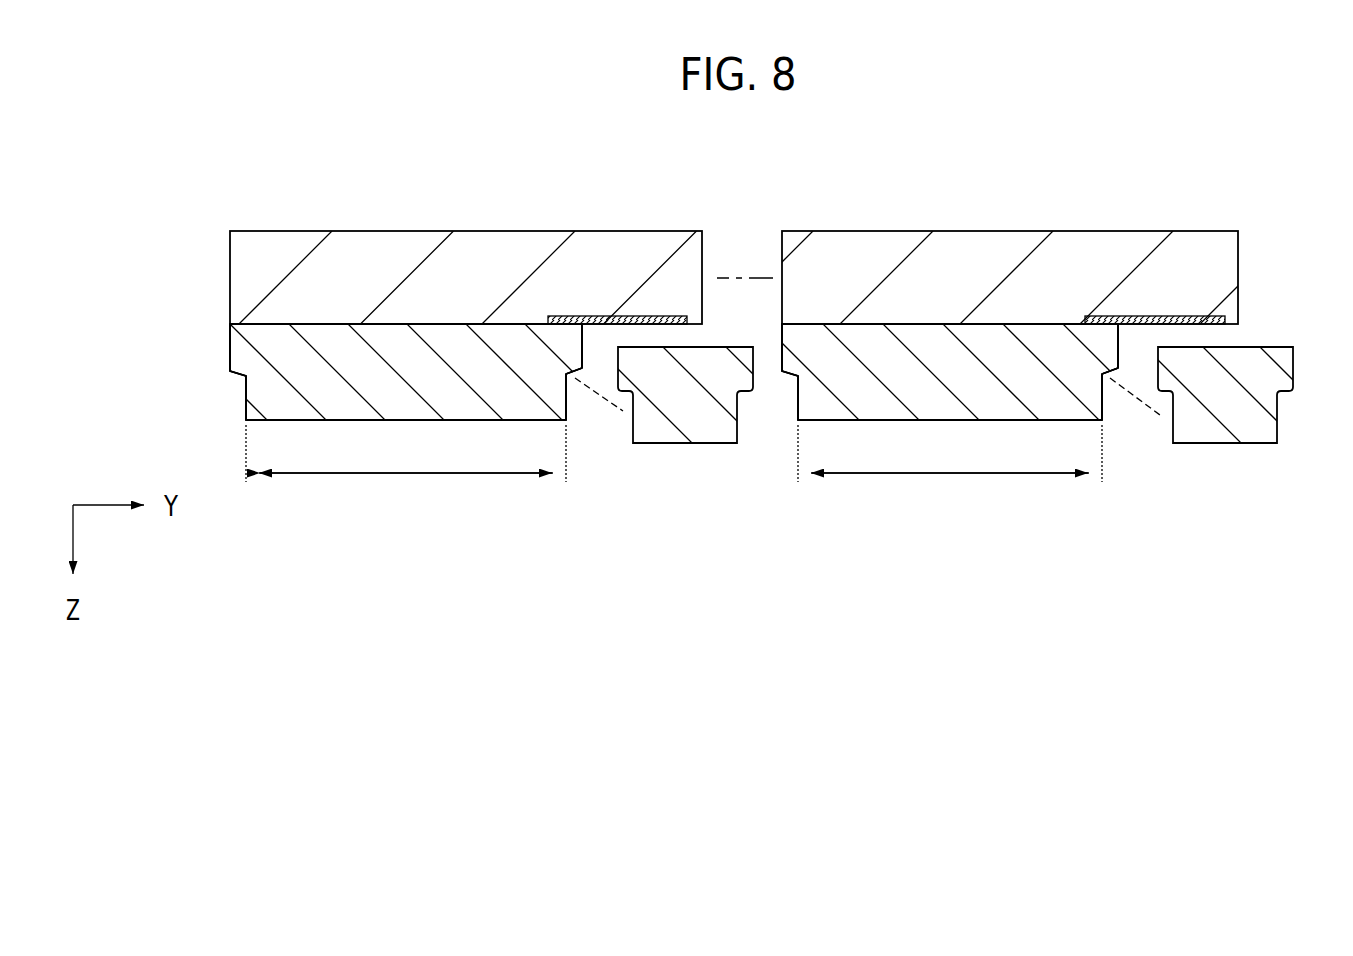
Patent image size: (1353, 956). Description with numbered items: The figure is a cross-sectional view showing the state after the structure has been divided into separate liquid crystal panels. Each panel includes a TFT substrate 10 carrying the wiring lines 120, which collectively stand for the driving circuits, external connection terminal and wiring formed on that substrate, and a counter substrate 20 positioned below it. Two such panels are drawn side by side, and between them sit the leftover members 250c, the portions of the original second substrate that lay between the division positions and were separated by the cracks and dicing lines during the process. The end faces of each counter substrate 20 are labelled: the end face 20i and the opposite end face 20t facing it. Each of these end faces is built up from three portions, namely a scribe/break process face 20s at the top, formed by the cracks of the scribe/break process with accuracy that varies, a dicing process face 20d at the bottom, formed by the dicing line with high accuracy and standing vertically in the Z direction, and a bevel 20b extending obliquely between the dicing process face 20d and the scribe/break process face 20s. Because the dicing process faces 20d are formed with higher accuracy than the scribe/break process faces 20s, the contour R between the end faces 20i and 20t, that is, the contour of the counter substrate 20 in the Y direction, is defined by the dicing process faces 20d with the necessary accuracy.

The TFT substrate 10 is at (258, 253).
The wiring lines 120 is at (636, 318).
The counter substrate 20 is at (459, 403).
The scribe/break process face 20s is at (228, 354).
The bevel 20b is at (242, 376).
The dicing process face 20d is at (244, 394).
The end face of counter substrate 20t is at (128, 338).
The end face of counter substrate 20i is at (560, 557).
The member 250c is at (693, 423).
The contour R is at (674, 453).